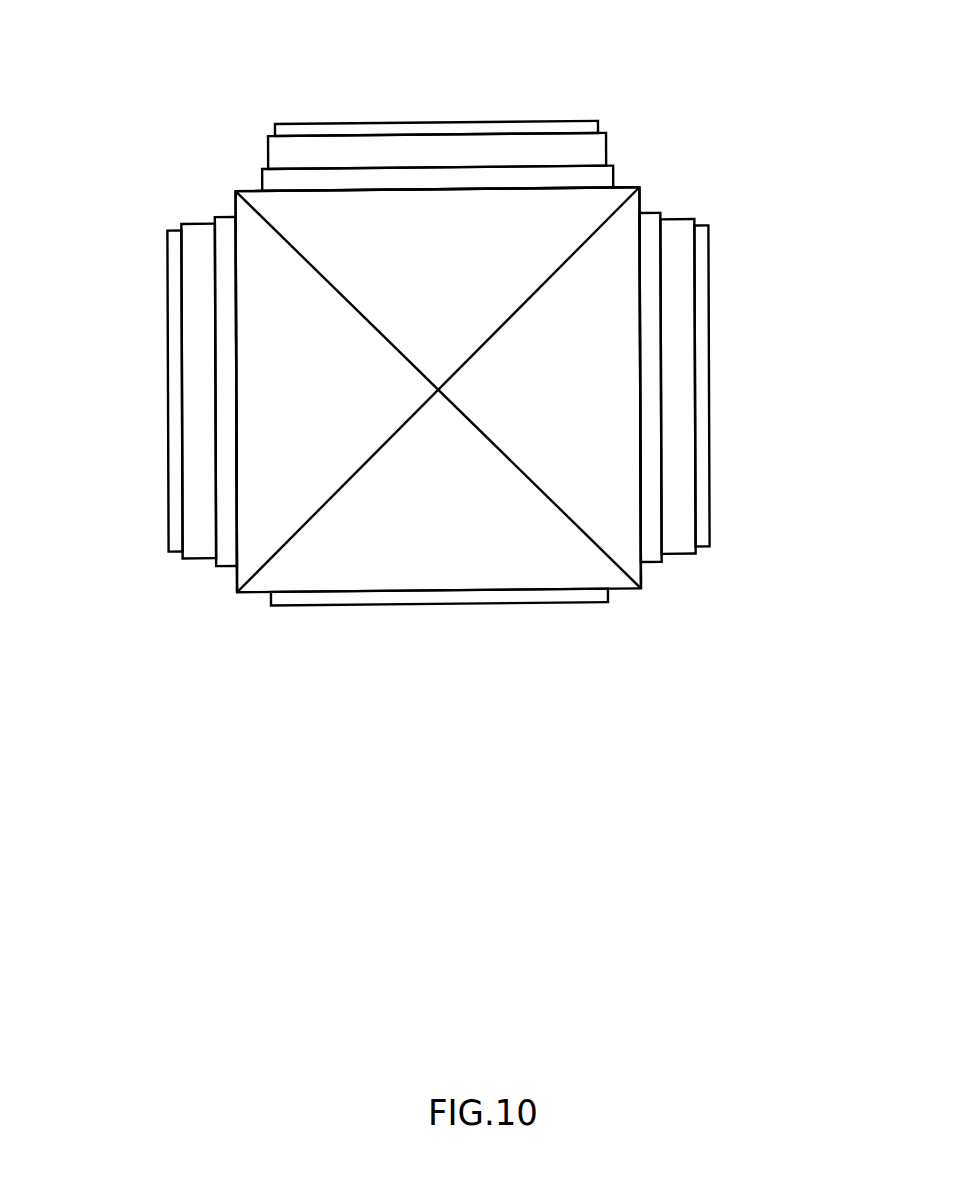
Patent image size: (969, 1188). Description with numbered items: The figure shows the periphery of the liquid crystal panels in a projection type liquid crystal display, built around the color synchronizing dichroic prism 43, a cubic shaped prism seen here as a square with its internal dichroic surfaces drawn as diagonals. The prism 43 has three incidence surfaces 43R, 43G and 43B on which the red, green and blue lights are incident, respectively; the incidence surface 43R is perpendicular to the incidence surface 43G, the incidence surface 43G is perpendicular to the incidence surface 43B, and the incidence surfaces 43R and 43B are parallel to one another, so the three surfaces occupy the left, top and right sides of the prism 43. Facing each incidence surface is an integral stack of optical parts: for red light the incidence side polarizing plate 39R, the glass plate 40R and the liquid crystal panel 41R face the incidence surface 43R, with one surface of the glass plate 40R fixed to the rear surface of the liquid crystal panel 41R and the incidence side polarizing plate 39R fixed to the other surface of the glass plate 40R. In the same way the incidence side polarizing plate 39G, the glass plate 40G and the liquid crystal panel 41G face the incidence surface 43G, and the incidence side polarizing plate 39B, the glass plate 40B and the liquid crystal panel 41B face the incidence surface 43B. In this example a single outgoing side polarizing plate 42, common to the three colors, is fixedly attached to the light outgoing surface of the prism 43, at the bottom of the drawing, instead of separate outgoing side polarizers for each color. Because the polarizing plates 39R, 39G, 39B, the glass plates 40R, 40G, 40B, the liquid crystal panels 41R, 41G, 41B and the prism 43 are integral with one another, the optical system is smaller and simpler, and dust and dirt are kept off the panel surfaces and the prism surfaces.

The incidence side polarizing plate 39G is at (307, 130).
The glass plate 40G is at (419, 150).
The liquid crystal panel 41G is at (517, 177).
The incidence side polarizing plate 39R is at (173, 301).
The glass plate 40R is at (195, 361).
The liquid crystal panel 41R is at (223, 424).
The incidence side polarizing plate 39B is at (699, 294).
The glass plate 40B is at (678, 350).
The liquid crystal panel 41B is at (652, 415).
The outgoing side polarizing plate 42 is at (577, 595).
The color synchronizing dichroic prism 43 is at (442, 645).
The incidence surface 43G is at (245, 188).
The incidence surface 43R is at (237, 582).
The incidence surface 43B is at (641, 197).